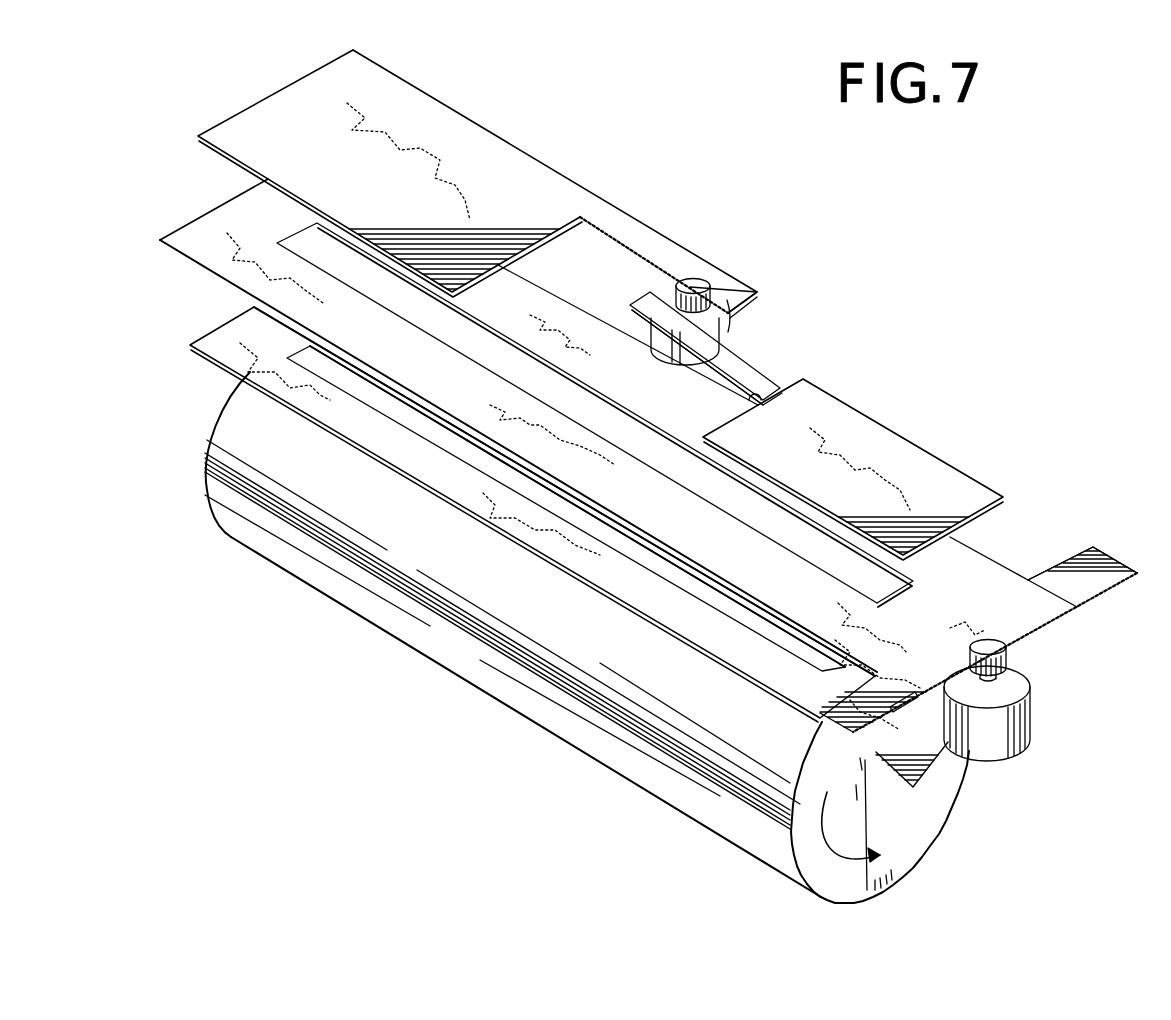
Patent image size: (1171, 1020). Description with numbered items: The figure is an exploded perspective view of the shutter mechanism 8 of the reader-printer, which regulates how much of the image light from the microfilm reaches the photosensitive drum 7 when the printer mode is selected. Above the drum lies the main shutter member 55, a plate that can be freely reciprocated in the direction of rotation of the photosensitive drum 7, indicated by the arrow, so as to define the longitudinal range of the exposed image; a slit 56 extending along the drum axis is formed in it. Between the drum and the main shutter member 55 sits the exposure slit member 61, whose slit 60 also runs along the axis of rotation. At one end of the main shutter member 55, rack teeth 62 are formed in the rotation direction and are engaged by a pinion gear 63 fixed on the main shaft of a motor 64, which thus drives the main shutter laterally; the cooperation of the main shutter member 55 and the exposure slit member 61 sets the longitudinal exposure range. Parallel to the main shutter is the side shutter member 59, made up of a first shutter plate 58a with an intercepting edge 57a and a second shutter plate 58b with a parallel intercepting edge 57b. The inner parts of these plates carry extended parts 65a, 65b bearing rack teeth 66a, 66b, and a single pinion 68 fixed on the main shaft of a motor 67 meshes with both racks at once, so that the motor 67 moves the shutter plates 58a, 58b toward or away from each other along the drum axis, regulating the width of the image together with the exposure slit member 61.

The photosensitive drum 7 is at (447, 640).
The shutter mechanism 8 is at (922, 437).
The main shutter member 55 is at (1093, 563).
The slit 56 is at (293, 227).
The intercepting edge 57a is at (477, 184).
The intercepting edge 57b is at (765, 412).
The first shutter plate 58a is at (433, 113).
The second shutter plate 58b is at (947, 485).
The side shutter member 59 is at (460, 200).
The slit 60 is at (358, 398).
The exposure slit member 61 is at (507, 509).
The rack teeth 62 is at (1100, 596).
The pinion gear 63 is at (978, 657).
The motor 64 is at (1012, 730).
The extended part 65a is at (683, 257).
The extended part 65b is at (653, 303).
The rack teeth 66a is at (630, 250).
The rack teeth 66b is at (757, 347).
The motor 67 is at (660, 346).
The pinion 68 is at (703, 290).